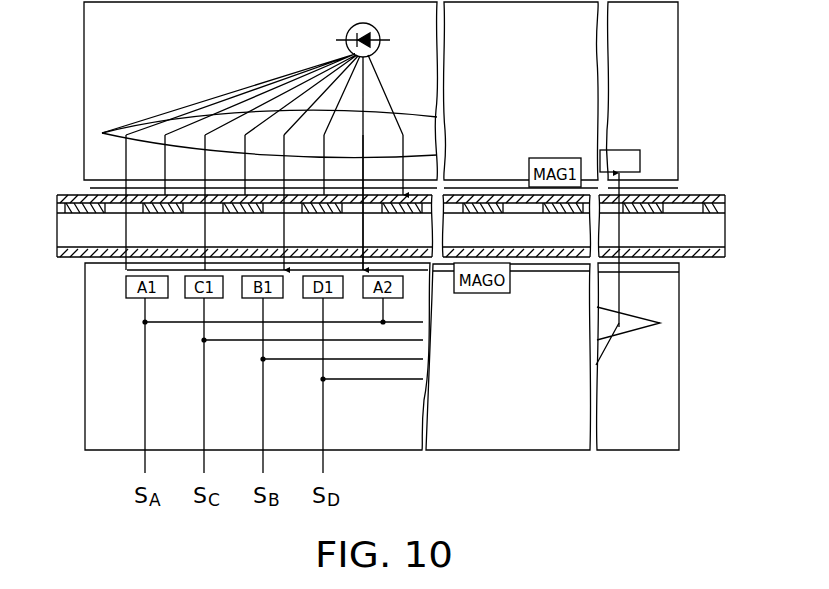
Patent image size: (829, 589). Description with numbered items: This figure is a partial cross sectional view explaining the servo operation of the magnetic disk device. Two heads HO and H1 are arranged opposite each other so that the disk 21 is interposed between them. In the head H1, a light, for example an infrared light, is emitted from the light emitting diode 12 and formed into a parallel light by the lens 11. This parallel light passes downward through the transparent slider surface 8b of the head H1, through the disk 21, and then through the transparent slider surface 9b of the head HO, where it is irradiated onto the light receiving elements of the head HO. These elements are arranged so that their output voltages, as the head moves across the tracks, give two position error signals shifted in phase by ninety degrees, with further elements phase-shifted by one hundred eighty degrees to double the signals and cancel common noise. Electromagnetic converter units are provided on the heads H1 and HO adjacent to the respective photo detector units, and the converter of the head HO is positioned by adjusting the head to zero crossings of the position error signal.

The lens 11 is at (141, 128).
The light emitting diode 12 is at (348, 31).
The transparent slider surface 8b is at (88, 183).
The transparent slider surface 9b is at (86, 280).
The disk 21 is at (726, 232).
The head H1 is at (679, 107).
The head HO is at (680, 367).